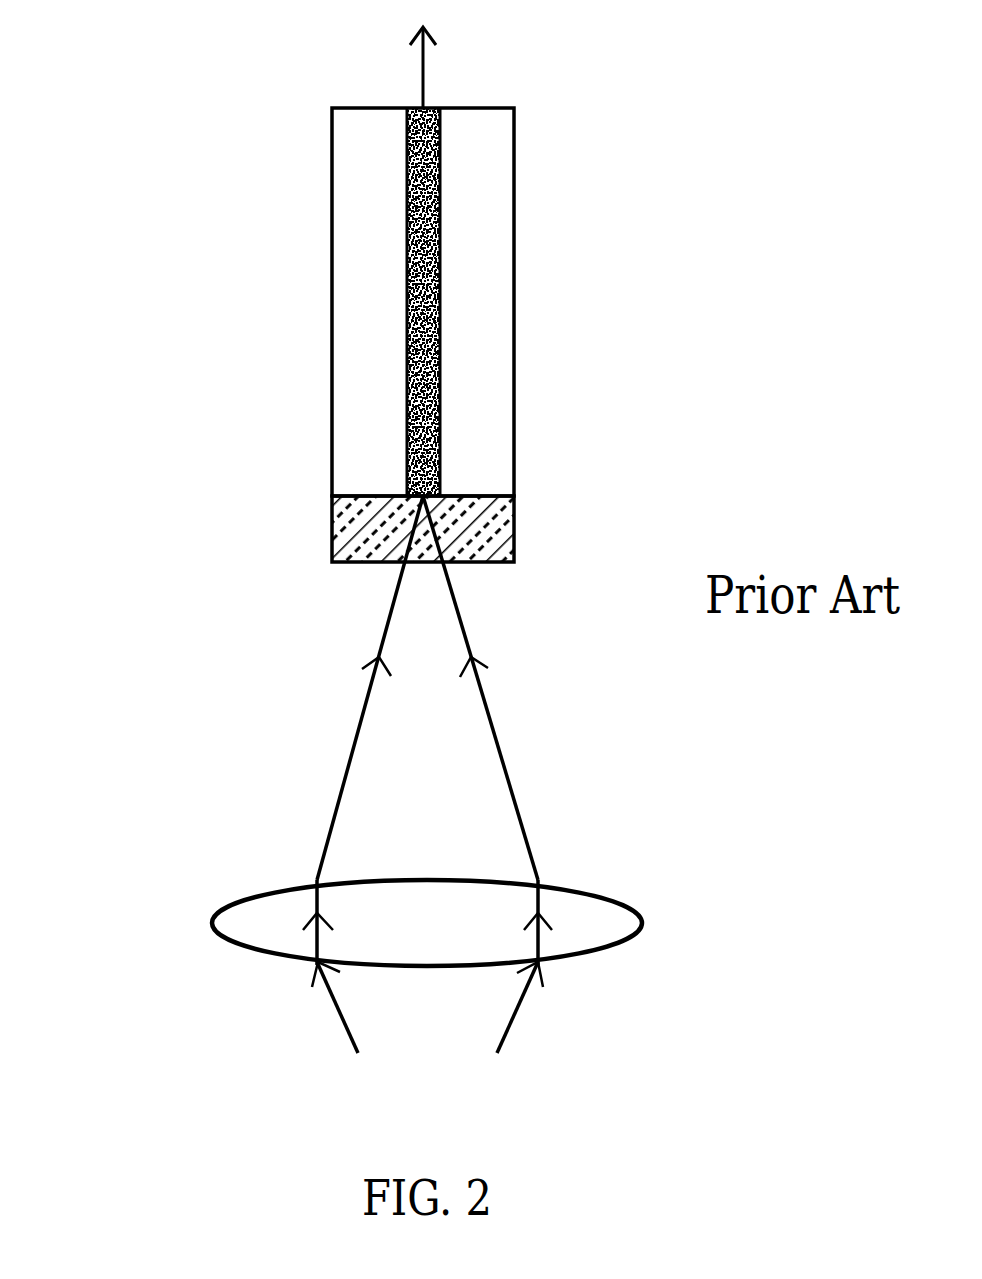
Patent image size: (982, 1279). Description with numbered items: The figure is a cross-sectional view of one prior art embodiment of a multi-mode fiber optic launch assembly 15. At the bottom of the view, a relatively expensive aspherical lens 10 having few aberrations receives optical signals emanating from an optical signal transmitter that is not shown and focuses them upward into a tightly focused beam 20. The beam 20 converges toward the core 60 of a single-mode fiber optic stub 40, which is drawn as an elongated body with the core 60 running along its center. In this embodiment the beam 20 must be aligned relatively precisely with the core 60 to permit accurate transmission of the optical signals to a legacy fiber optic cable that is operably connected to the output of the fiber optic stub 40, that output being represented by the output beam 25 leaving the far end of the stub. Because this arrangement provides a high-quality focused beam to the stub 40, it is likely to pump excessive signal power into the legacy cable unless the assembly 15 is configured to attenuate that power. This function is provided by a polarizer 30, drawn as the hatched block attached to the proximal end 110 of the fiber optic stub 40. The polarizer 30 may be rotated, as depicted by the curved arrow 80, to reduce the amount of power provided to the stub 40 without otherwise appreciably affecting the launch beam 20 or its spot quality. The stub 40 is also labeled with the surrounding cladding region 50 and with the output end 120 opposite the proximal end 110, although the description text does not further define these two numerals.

The aspherical lens 10 is at (612, 918).
The multi-mode fiber optic launch assembly 15 is at (100, 965).
The beam 20 is at (505, 767).
The output beam 25 is at (425, 56).
The polarizer 30 is at (515, 535).
The single-mode fiber optic stub 40 is at (595, 246).
The host material 50 is at (490, 155).
The core 60 is at (440, 323).
The arrow 80 is at (285, 380).
The proximal end 110 is at (272, 545).
The output end 120 is at (280, 112).